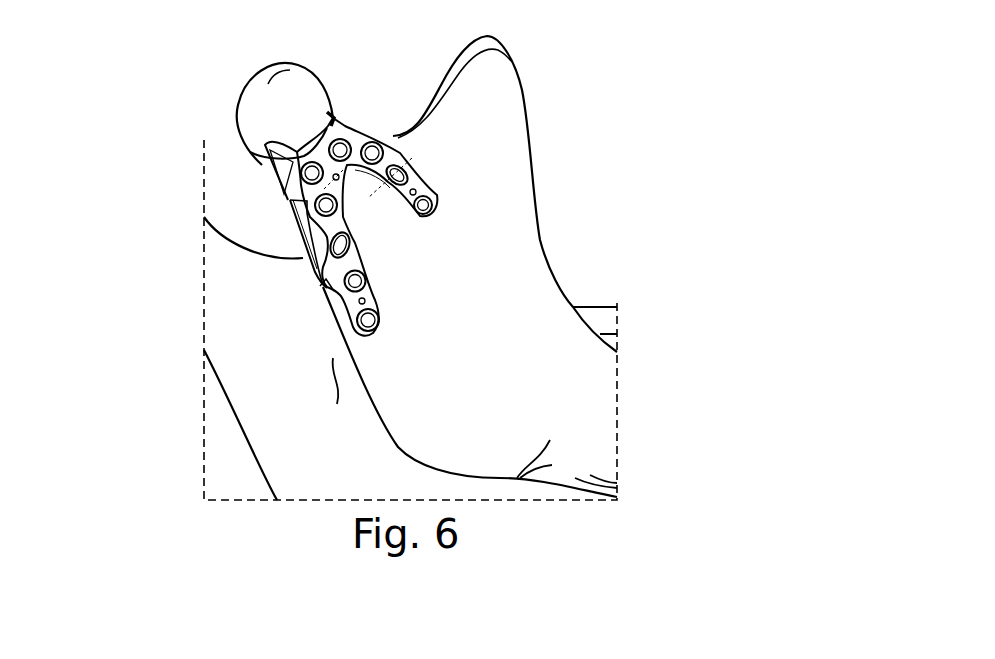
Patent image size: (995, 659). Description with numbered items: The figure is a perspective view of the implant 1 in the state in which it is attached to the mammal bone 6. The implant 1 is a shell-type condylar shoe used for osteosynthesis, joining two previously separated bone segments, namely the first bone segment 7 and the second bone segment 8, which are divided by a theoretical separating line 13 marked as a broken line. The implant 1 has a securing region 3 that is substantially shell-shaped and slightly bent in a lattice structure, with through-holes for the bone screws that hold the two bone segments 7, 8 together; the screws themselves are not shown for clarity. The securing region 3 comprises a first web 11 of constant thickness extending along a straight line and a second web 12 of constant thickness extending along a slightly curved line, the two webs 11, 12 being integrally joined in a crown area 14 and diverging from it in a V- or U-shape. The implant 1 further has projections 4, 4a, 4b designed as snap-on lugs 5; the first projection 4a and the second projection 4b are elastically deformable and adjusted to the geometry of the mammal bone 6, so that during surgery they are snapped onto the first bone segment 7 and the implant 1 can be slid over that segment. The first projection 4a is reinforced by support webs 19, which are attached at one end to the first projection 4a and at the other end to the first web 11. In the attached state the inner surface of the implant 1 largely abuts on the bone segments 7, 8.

The implant 1 is at (380, 122).
The securing region 3 is at (333, 223).
The projections 4 is at (355, 191).
The first projection 4a is at (287, 207).
The second projection 4b is at (343, 125).
The snap-on lugs 5 is at (355, 191).
The mammal bone 6 is at (445, 148).
The first bone segment 7 is at (252, 102).
The second bone segment 8 is at (412, 155).
The first web 11 is at (332, 291).
The second web 12 is at (413, 183).
The separating line 13 is at (303, 222).
The crown area 14 is at (315, 150).
The support webs 19 is at (267, 143).